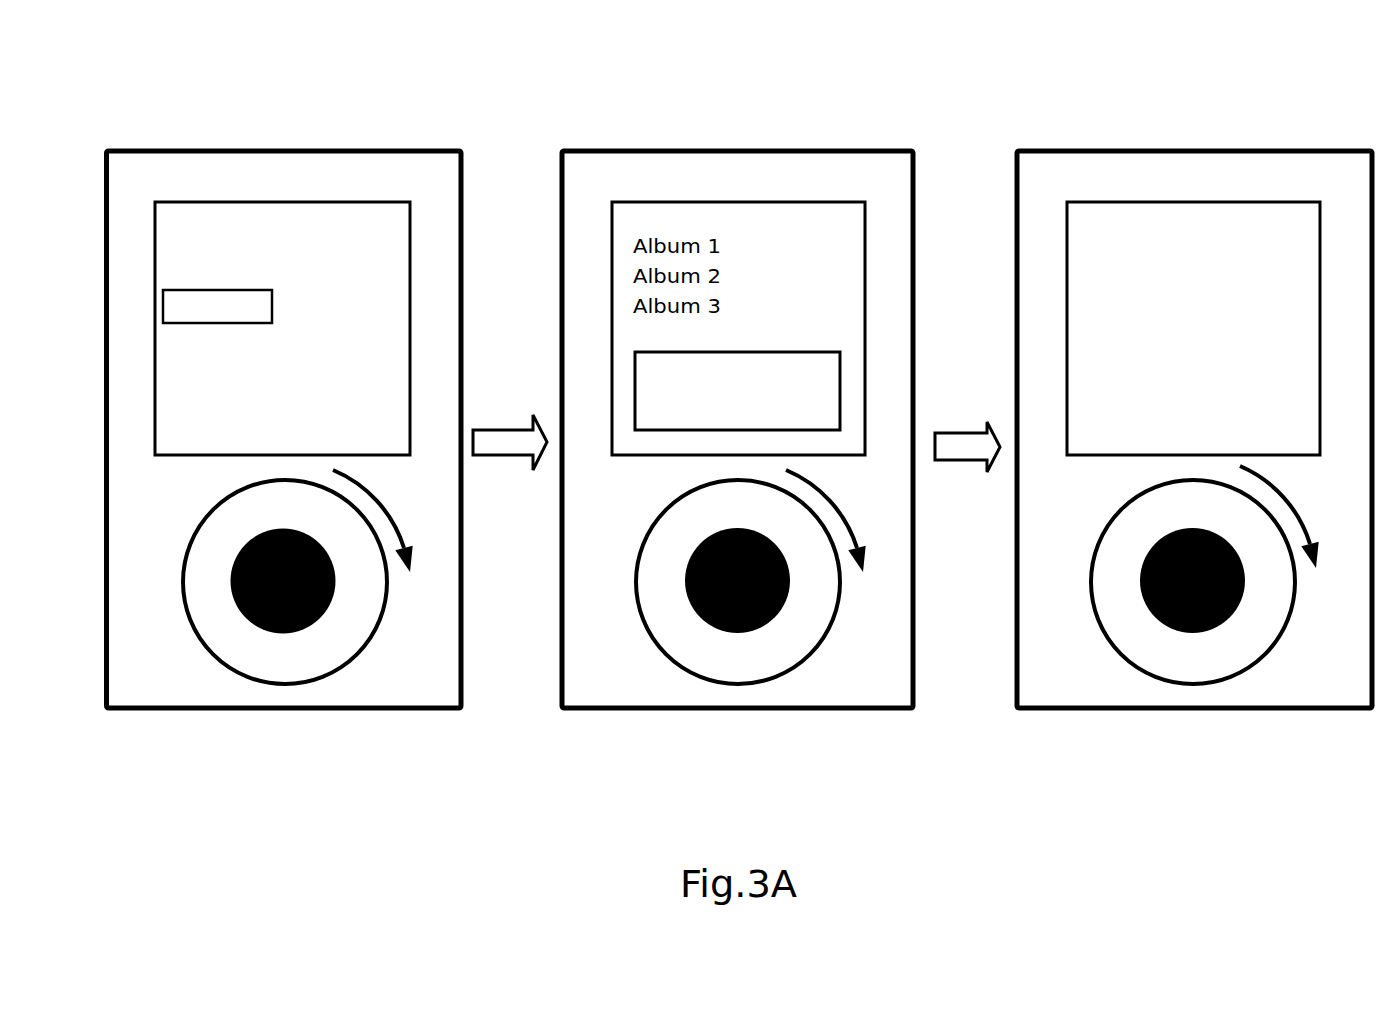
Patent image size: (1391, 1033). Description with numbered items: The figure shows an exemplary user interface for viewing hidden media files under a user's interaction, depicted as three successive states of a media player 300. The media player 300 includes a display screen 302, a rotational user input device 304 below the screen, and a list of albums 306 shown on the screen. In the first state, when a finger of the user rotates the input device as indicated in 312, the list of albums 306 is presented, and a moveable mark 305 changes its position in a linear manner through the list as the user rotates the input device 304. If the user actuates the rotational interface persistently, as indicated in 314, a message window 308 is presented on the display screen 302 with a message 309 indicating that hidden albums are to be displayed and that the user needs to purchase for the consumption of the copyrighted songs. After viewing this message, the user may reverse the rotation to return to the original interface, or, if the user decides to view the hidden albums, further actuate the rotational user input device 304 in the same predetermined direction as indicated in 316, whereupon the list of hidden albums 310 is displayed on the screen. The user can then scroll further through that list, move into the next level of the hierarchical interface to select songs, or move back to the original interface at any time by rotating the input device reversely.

The media player 300 is at (284, 373).
The display screen 302 is at (178, 457).
The rotational user input device 304 is at (185, 610).
The moveable mark 305 is at (273, 323).
The list of albums 306 is at (290, 270).
The message window 308 is at (740, 352).
The message 309 is at (677, 415).
The list of hidden albums 310 is at (1183, 293).
The rotation of the input device 312 is at (182, 73).
The persistent actuation of the rotational interface 314 is at (737, 398).
The further actuation in the predetermined direction 316 is at (1194, 398).